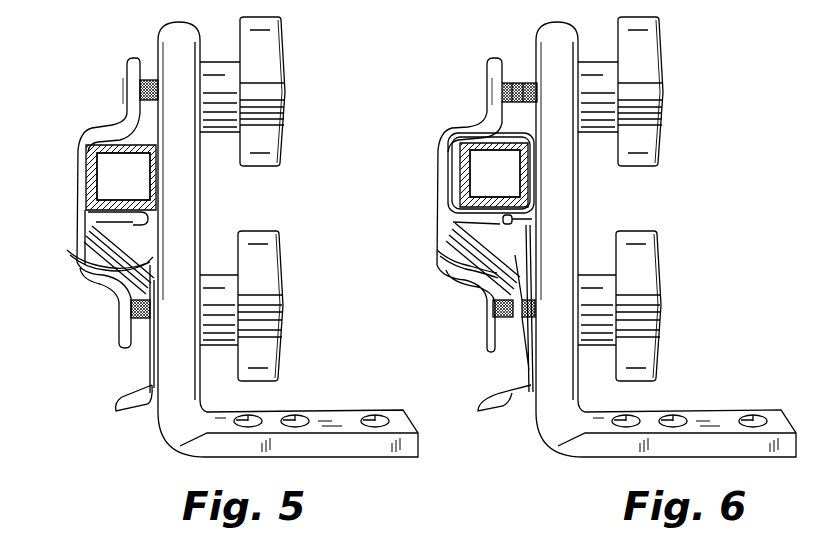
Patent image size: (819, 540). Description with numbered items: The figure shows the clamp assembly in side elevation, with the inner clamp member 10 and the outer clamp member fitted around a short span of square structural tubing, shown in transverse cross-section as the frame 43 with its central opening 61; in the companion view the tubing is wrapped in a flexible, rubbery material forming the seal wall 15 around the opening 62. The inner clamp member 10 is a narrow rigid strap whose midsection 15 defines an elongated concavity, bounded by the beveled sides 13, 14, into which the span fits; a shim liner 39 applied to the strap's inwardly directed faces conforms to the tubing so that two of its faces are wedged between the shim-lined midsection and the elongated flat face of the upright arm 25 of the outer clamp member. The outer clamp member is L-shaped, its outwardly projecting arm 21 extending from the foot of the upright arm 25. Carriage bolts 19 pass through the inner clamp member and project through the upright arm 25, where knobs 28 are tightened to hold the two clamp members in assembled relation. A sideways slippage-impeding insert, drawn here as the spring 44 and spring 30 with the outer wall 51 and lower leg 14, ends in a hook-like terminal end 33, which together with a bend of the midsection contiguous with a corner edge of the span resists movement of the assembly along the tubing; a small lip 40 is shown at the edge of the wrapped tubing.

In FIG. 5, the inner clamp member 10 is at (108, 289).
In FIG. 6, the inner clamp member 10 is at (475, 287).
In FIG. 5, the beveled side 13 is at (102, 118).
In FIG. 5, the beveled side 14 is at (90, 278).
In FIG. 6, the beveled side 14 is at (455, 277).
In FIG. 5, the midsection 15 is at (72, 225).
In FIG. 6, the midsection 15 is at (440, 167).
In FIG. 5, the carriage bolt 19 is at (141, 340).
In FIG. 6, the carriage bolt 19 is at (523, 83).
In FIG. 5, the outwardly projecting arm 21 is at (322, 413).
In FIG. 6, the outwardly projecting arm 21 is at (700, 413).
In FIG. 5, the upright arm 25 is at (185, 232).
In FIG. 6, the upright arm 25 is at (563, 232).
In FIG. 5, the knob 28 is at (287, 88).
In FIG. 6, the knob 28 is at (663, 88).
In FIG. 6, the spring 30 is at (480, 238).
In FIG. 5, the hook 33 is at (115, 402).
In FIG. 6, the hook 33 is at (497, 400).
In FIG. 5, the shim liner 39 is at (143, 68).
In FIG. 6, the shim liner 39 is at (510, 72).
In FIG. 6, the lip 40 is at (543, 222).
In FIG. 5, the frame 43 is at (100, 145).
In FIG. 5, the spring 44 is at (93, 248).
In FIG. 5, the outer wall 51 is at (76, 178).
In FIG. 5, the opening 61 is at (134, 157).
In FIG. 6, the opening 62 is at (488, 194).